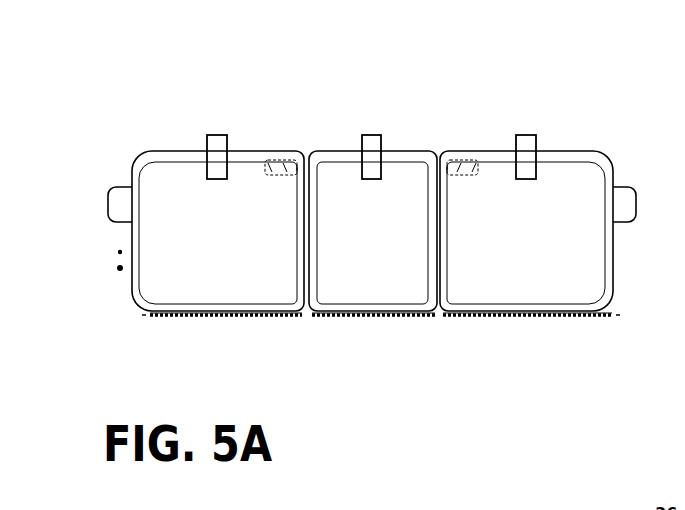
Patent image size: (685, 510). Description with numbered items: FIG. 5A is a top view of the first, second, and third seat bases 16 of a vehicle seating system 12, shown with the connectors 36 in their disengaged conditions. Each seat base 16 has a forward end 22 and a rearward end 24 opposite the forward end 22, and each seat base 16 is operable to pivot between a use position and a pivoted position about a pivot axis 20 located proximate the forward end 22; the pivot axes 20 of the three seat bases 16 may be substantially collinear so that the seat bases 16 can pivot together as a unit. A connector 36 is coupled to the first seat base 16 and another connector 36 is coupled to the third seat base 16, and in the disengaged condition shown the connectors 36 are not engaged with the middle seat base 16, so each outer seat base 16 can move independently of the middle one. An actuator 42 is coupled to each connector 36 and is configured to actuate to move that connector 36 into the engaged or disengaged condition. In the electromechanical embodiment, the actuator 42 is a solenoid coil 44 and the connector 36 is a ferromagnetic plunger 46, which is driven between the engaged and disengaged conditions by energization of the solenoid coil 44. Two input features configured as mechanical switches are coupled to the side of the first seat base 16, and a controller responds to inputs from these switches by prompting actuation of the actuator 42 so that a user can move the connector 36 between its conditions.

The seating system 12 is at (160, 137).
The seat base 16 is at (372, 233).
The pivot axis 20 is at (219, 317).
The forward end 22 is at (188, 315).
The rearward end 24 is at (194, 148).
The connector 36 is at (262, 158).
The actuator 42 is at (300, 164).
The solenoid coil 44 is at (285, 166).
The ferromagnetic plunger 46 is at (269, 168).